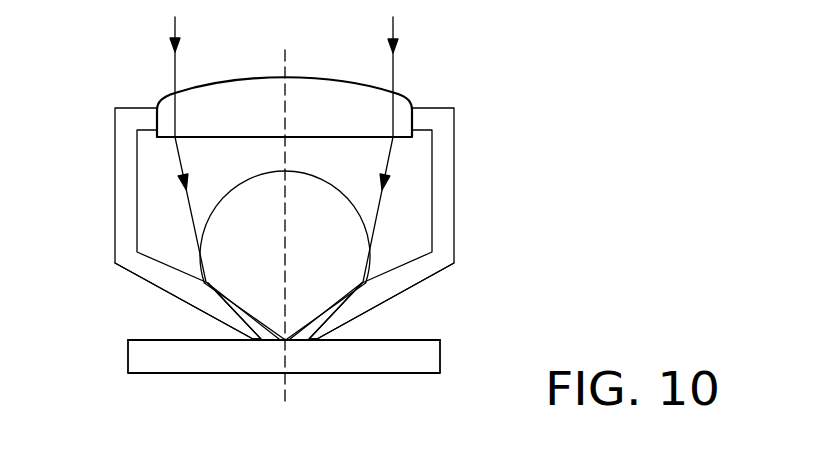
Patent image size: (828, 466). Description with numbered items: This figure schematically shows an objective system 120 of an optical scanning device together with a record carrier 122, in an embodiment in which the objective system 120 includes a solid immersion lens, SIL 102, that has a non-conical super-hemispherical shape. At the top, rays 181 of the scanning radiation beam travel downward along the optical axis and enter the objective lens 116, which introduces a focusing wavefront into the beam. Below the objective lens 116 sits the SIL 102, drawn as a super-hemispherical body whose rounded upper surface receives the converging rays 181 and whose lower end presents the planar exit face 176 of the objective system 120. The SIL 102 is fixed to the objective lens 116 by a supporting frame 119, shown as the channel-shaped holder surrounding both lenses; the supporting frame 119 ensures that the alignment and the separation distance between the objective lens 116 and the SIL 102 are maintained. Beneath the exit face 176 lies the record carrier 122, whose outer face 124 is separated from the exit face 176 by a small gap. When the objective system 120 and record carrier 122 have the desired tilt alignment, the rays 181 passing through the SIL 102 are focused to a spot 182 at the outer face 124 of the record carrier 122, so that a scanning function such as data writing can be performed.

The solid immersion lens 102 is at (333, 200).
The objective lens 116 is at (345, 95).
The supporting frame 119 is at (123, 150).
The objective system 120 is at (117, 255).
The record carrier 122 is at (191, 360).
The outer face 124 is at (150, 347).
The exit face 176 is at (263, 343).
The rays of scanning radiation beam 181 is at (396, 28).
The spot 182 is at (288, 343).